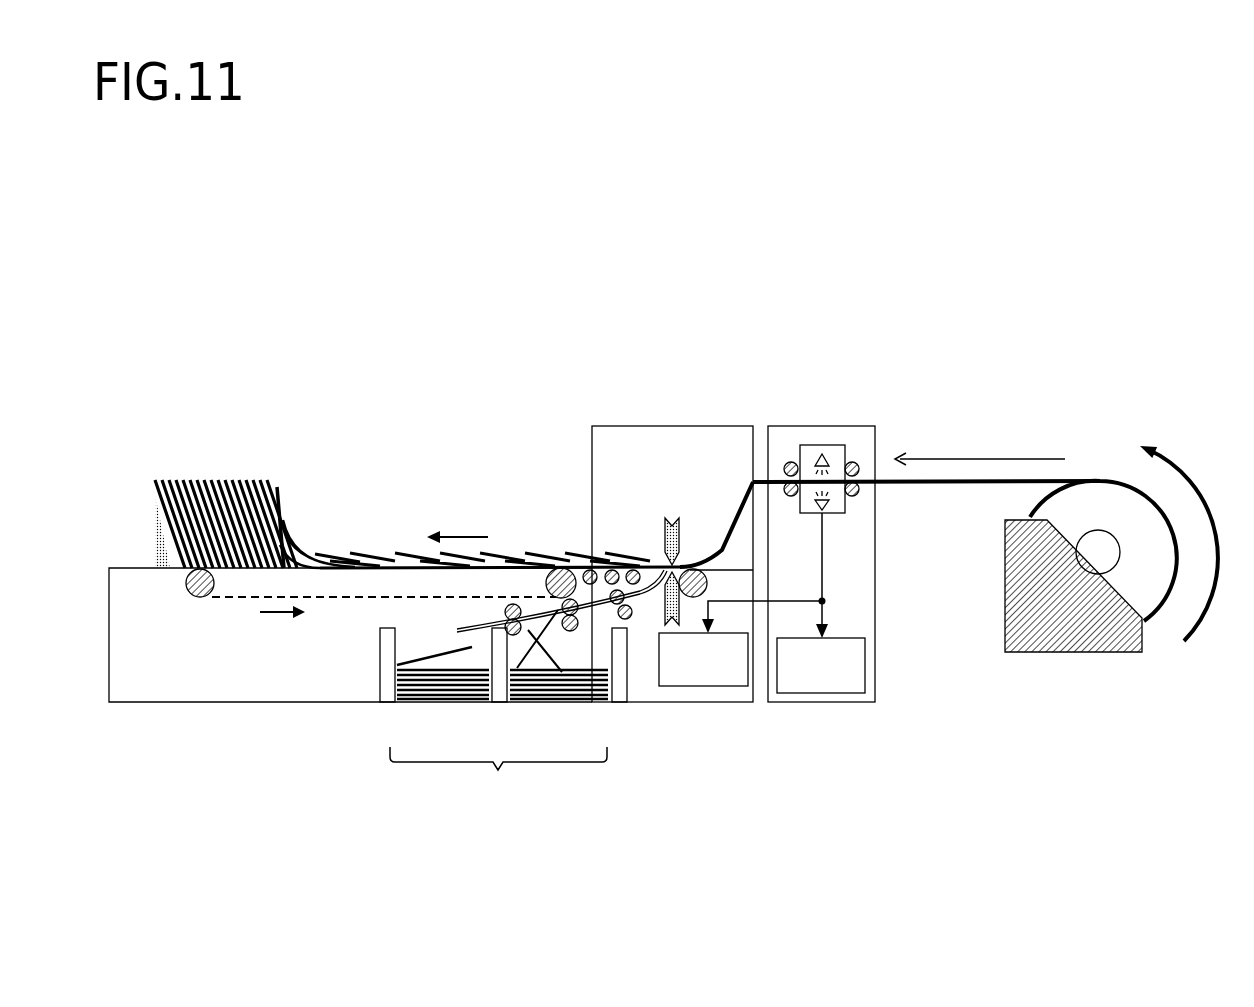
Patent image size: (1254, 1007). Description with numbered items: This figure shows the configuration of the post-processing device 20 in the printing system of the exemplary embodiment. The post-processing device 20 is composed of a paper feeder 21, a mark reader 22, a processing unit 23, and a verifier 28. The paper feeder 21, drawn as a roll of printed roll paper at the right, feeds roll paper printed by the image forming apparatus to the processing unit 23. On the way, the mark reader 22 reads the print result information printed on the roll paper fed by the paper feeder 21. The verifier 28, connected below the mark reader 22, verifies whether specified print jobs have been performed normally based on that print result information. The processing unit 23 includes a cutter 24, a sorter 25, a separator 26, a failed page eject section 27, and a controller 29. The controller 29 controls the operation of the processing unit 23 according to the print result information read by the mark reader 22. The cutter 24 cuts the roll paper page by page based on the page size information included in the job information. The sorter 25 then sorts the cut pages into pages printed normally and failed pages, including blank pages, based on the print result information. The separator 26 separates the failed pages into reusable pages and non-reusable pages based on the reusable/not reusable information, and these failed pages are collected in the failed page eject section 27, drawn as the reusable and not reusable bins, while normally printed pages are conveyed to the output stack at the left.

The post-processing device 20 is at (446, 348).
The paper feeder 21 is at (1053, 652).
The mark reader 22 is at (822, 445).
The processing unit 23 is at (652, 426).
The cutter 24 is at (672, 520).
The sorter 25 is at (647, 565).
The separator 26 is at (605, 693).
The failed page eject section 27 is at (509, 718).
The verifier 28 is at (818, 702).
The controller 29 is at (706, 686).